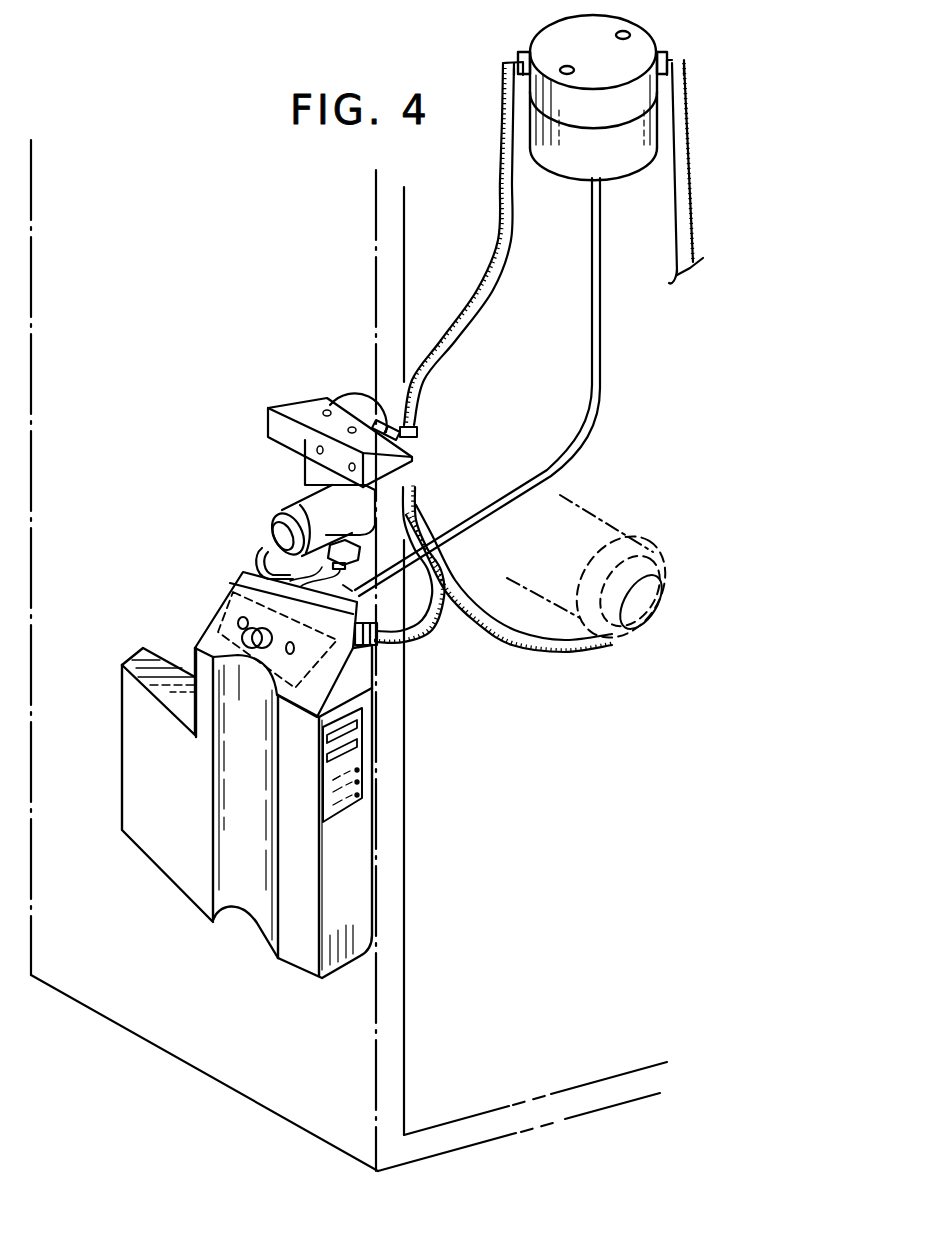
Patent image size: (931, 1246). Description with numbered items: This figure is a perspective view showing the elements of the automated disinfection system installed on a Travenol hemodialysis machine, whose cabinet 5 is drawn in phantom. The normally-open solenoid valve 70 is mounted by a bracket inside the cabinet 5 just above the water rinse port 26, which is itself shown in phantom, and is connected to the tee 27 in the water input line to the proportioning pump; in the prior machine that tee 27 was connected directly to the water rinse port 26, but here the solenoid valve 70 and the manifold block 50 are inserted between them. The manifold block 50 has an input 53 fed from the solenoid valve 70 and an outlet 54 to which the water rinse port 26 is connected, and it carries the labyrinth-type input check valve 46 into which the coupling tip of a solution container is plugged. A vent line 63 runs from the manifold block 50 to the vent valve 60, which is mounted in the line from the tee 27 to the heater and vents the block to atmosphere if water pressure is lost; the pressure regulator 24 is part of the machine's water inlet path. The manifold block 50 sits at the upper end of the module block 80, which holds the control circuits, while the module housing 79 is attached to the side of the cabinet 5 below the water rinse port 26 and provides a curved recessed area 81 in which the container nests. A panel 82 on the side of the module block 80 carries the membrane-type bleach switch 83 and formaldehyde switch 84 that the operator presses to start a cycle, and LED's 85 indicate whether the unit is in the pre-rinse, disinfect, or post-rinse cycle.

The cabinet 5 is at (414, 959).
The pressure regulator 24 is at (659, 562).
The water rinse port 26 is at (301, 493).
The tee 27 is at (412, 443).
The input check valve 46 is at (268, 653).
The manifold block 50 is at (267, 641).
The input 53 is at (293, 584).
The outlet 54 is at (361, 626).
The vent valve 60 is at (587, 162).
The vent line 63 is at (600, 406).
The normally-open solenoid valve 70 is at (362, 408).
The module housing 79 is at (135, 784).
The module block 80 is at (241, 811).
The recessed area 81 is at (248, 895).
The panel 82 is at (348, 818).
The bleach switch 83 is at (326, 742).
The formaldehyde switch 84 is at (326, 764).
The LED's 85 is at (328, 797).